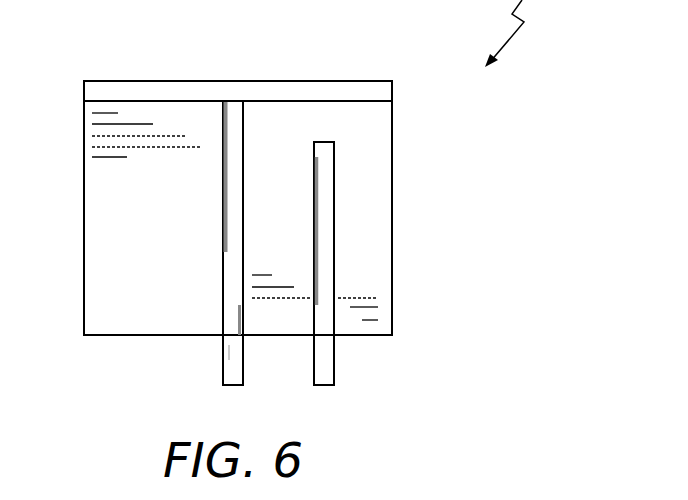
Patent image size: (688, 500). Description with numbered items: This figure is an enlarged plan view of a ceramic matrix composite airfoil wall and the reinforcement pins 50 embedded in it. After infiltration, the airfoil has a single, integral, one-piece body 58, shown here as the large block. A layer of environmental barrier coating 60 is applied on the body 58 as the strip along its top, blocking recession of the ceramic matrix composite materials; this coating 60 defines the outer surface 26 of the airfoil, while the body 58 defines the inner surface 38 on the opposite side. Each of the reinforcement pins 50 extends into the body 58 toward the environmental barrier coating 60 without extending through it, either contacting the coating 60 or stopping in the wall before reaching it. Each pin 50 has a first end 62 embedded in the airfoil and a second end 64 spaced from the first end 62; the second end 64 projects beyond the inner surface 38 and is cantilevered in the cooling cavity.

The outer surface 26 is at (268, 218).
The environmental barrier coating 60 is at (375, 88).
The body 58 is at (375, 143).
The inner surface 38 is at (150, 335).
The reinforcement pins 50 is at (236, 187).
The first end 62 is at (246, 118).
The second end 64 is at (236, 392).